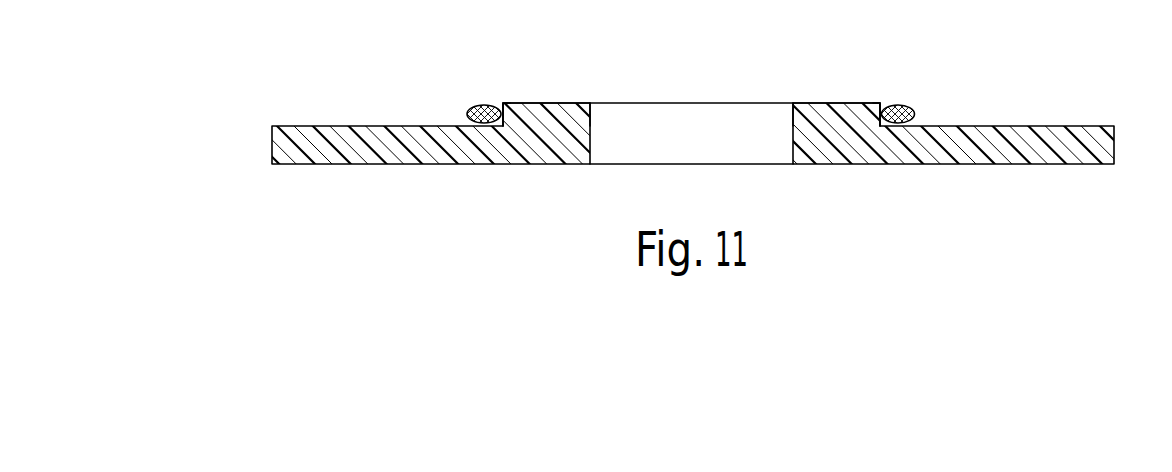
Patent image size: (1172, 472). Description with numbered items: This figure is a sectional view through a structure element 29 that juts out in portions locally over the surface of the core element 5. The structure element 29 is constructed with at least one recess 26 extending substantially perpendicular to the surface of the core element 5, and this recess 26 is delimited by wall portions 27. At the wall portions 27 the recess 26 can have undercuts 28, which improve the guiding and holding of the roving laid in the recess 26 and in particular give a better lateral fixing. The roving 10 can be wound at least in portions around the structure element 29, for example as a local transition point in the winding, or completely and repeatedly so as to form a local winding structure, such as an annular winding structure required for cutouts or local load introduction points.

The core element 5 is at (300, 140).
The roving 10 is at (471, 106).
The recess 26 is at (898, 101).
The wall portion 27 is at (503, 103).
The undercut 28 is at (494, 105).
The structure element 29 is at (684, 93).